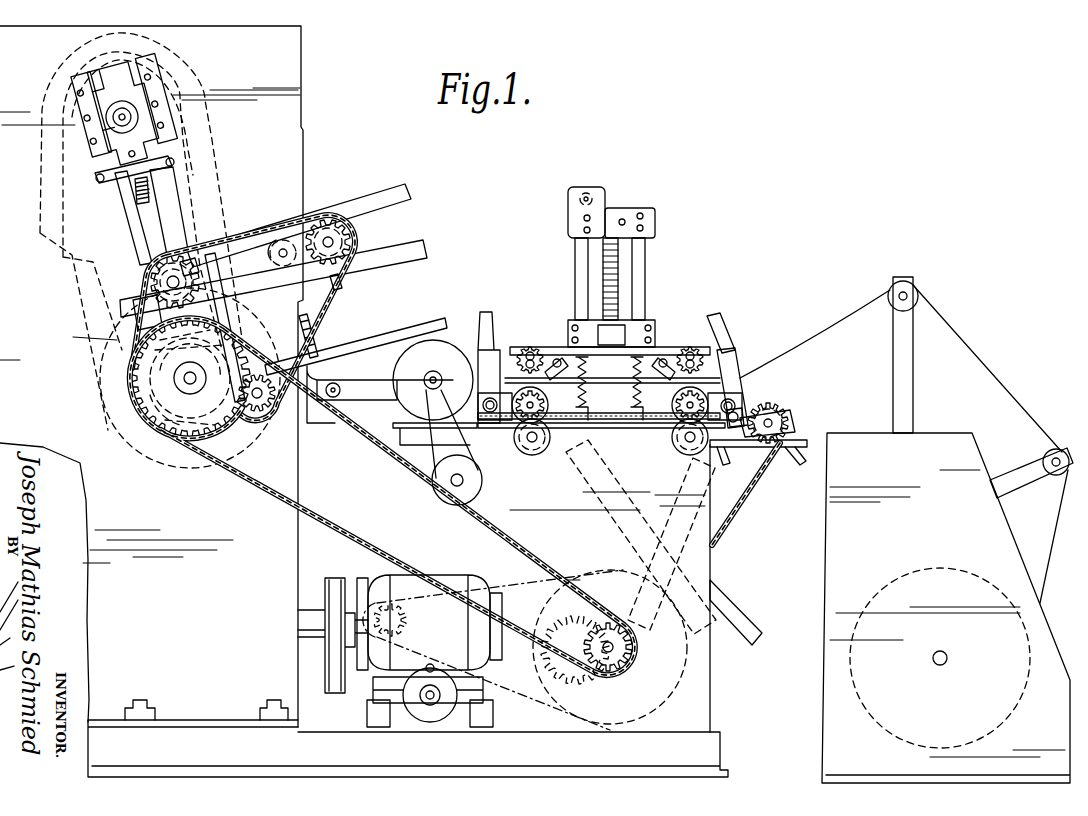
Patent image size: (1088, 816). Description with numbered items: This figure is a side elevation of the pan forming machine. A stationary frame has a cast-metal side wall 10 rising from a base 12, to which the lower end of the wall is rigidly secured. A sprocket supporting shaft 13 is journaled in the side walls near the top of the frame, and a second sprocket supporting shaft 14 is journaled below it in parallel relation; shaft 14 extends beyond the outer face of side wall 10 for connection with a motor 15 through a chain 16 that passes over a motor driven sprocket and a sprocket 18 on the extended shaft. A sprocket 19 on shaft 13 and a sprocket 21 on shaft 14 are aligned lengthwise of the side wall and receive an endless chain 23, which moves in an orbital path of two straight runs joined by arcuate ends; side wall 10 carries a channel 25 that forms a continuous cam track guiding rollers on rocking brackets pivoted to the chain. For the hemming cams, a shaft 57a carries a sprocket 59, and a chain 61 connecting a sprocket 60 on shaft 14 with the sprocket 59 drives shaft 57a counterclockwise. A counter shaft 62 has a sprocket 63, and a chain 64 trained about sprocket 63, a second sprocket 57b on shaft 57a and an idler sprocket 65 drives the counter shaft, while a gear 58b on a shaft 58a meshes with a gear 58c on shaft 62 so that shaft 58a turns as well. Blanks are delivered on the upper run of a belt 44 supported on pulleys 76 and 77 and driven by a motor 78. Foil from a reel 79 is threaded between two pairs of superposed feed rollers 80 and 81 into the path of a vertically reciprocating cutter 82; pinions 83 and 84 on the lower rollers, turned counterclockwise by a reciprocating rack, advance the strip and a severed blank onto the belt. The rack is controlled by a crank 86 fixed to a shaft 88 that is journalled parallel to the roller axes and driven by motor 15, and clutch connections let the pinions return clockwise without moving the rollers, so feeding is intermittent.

The side wall 10 is at (288, 104).
The base 12 is at (285, 757).
The sprocket supporting shaft 13 is at (127, 117).
The sprocket supporting shaft 14 is at (190, 394).
The motor 15 is at (440, 628).
The chain 16 is at (548, 548).
The sprocket 18 is at (150, 430).
The sprocket 19 is at (75, 80).
The sprocket 21 is at (108, 427).
The endless chain 23 is at (205, 178).
The channel 25 is at (80, 228).
The belt 44 is at (393, 426).
The shaft 57a is at (140, 312).
The second sprocket 57b is at (195, 262).
The shaft 58a is at (300, 300).
The gear 58b is at (290, 240).
The gear 58c is at (340, 288).
The sprocket 59 is at (158, 285).
The sprocket 60 is at (150, 360).
The chain 61 is at (128, 350).
The counter shaft 62 is at (355, 226).
The sprocket 63 is at (340, 228).
The chain 64 is at (318, 324).
The idler sprocket 65 is at (268, 414).
The pulley 76 is at (350, 378).
The pulley 77 is at (440, 345).
The motor 78 is at (480, 488).
The reel 79 is at (925, 570).
The feed rollers 80 is at (740, 400).
The feed rollers 81 is at (705, 358).
The cutter 82 is at (618, 347).
The pinion 83 is at (512, 428).
The pinion 84 is at (672, 437).
The crank 86 is at (772, 408).
The shaft 88 is at (773, 424).